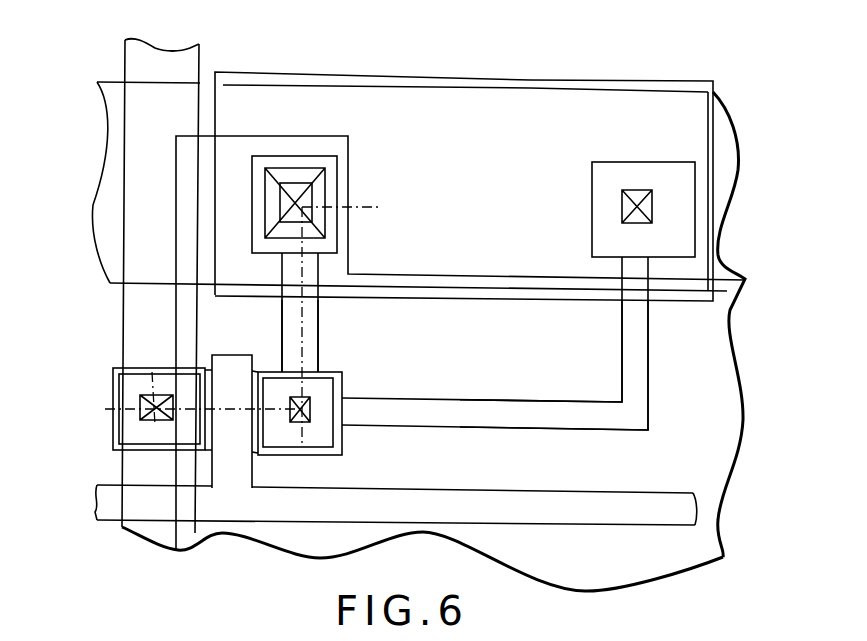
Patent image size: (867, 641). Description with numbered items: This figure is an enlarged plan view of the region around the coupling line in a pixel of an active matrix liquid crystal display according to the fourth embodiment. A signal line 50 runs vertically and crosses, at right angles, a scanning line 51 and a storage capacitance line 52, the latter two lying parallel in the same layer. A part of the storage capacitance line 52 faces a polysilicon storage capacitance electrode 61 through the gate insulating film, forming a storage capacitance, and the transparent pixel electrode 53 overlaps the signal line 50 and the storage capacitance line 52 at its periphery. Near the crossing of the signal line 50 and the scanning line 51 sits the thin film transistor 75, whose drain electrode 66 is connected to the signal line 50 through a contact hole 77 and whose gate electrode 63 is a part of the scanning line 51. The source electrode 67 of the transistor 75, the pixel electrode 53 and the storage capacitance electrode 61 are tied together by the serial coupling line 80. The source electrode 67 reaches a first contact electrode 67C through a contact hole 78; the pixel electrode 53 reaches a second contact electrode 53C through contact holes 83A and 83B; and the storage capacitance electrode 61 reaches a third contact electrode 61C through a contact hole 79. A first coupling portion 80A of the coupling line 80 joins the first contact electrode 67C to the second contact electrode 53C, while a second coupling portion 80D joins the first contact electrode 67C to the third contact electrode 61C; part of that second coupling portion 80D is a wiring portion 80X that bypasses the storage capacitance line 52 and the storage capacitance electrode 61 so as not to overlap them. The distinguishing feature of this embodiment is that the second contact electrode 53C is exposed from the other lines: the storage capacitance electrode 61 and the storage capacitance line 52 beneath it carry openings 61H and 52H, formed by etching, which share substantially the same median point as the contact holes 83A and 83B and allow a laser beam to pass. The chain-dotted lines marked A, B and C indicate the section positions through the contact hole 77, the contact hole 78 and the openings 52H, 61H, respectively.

The signal line 50 is at (165, 62).
The scanning line 51 is at (96, 499).
The storage capacitance line 52 is at (98, 200).
The pixel electrode 53 is at (712, 525).
The second contact electrode 53C is at (266, 155).
The storage capacitance electrode 61 is at (497, 78).
The third contact electrode 61C is at (657, 162).
The gate electrode 63 is at (235, 360).
The drain electrode 66 is at (120, 410).
The source electrode 67 is at (342, 441).
The first contact electrode 67C is at (322, 442).
The thin film transistor 75 is at (104, 434).
The contact hole 77 is at (145, 397).
The contact hole 78 is at (312, 408).
The contact hole 79 is at (630, 192).
The coupling line 80 is at (331, 313).
The first coupling portion 80A is at (308, 345).
The second coupling portion 80D is at (504, 430).
The wiring portion 80X is at (548, 401).
The contact hole 83A is at (332, 171).
The contact hole 83B is at (303, 172).
The opening 52H is at (369, 189).
The opening 61H is at (325, 197).
The section line A is at (152, 372).
The section line B is at (298, 440).
The section line C is at (305, 208).